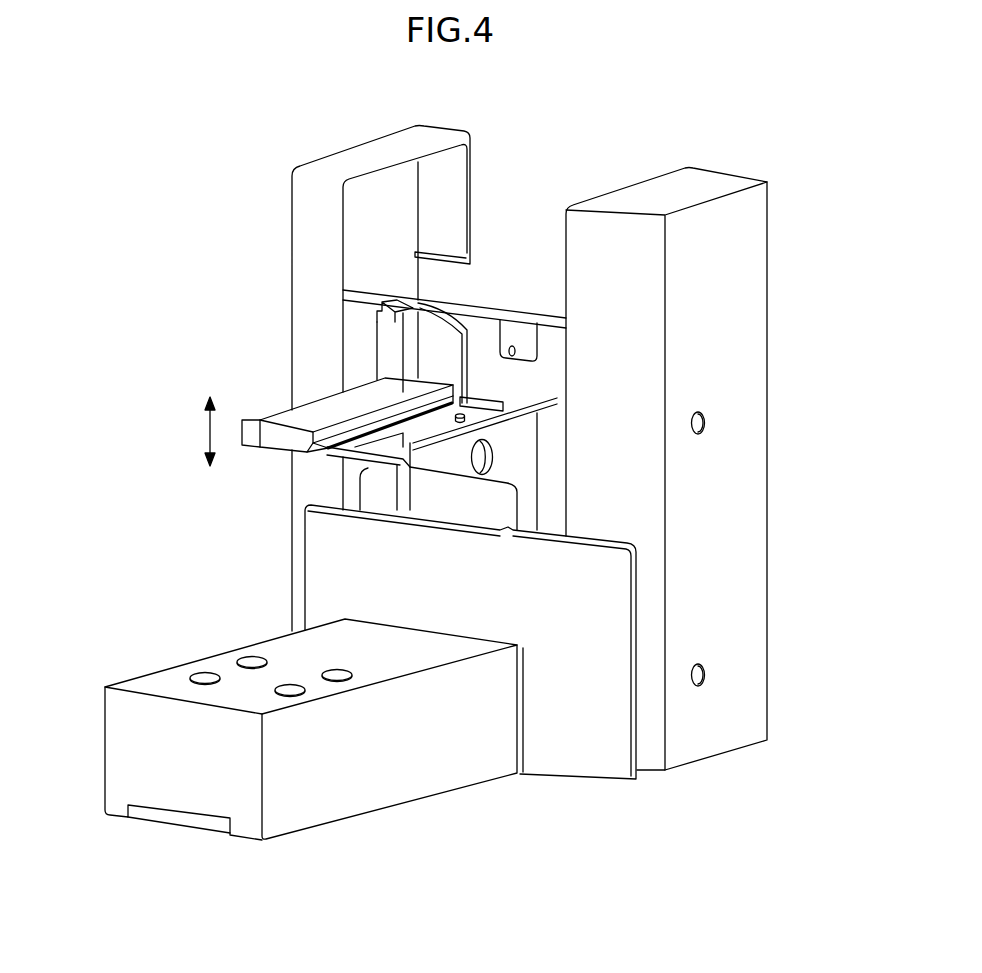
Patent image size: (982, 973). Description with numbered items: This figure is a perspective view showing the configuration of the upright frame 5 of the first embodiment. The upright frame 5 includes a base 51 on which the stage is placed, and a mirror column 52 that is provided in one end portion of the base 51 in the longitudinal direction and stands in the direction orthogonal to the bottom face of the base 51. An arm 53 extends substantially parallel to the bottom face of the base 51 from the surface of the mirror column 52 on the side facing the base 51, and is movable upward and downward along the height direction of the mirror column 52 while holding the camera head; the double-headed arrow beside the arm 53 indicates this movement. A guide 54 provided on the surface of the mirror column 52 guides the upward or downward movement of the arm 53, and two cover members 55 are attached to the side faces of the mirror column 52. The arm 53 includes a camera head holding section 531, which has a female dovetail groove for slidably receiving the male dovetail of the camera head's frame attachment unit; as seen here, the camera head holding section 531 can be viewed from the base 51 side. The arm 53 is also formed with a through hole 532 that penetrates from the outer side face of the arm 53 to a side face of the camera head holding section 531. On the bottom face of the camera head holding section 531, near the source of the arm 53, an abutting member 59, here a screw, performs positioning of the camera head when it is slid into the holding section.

The upright frame 5 is at (647, 168).
The base 51 is at (115, 746).
The mirror column 52 is at (521, 376).
The arm 53 is at (276, 411).
The camera head holding section 531 is at (322, 452).
The through hole 532 is at (482, 457).
The guide 54 is at (389, 322).
The cover members 55 is at (300, 231).
The abutting member 59 is at (461, 412).